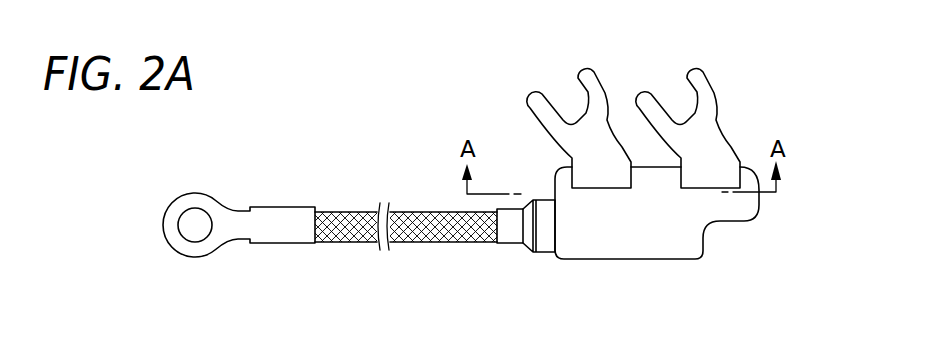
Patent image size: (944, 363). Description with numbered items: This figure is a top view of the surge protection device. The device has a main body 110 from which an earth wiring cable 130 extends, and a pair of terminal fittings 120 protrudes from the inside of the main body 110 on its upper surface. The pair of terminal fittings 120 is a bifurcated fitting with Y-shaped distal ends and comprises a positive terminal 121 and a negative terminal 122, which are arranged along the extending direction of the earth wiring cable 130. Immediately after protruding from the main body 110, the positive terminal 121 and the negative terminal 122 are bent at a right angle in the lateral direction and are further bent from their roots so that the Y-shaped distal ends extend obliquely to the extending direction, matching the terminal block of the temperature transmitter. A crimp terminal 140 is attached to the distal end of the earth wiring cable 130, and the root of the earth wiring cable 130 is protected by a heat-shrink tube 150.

The main body 110 is at (658, 243).
The terminal fittings 120 is at (710, 66).
The positive terminal 121 is at (713, 128).
The negative terminal 122 is at (575, 157).
The earth wiring cable 130 is at (411, 230).
The crimp terminal 140 is at (267, 232).
The heat-shrink tube 150 is at (513, 230).